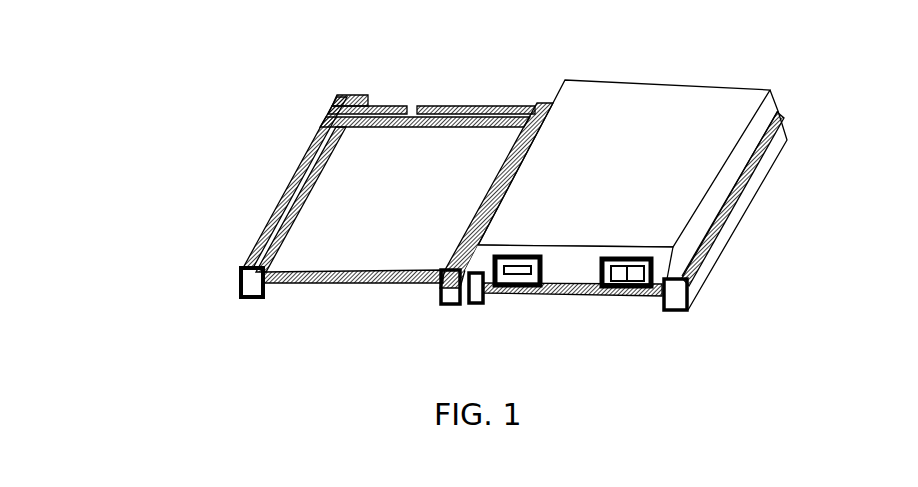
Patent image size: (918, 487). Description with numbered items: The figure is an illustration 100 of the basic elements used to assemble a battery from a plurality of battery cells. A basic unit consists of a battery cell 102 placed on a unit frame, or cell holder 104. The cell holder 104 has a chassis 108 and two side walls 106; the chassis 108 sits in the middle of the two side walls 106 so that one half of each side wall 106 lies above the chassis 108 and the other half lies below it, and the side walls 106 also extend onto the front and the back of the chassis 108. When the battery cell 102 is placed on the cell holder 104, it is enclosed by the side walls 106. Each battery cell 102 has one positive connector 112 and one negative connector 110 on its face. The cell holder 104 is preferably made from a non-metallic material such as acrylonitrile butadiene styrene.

The illustration 100 is at (256, 94).
The battery cell 102 is at (613, 82).
The unit frame (cell holder) 104 is at (385, 105).
The side wall 106 is at (256, 233).
The chassis 108 is at (292, 280).
The negative connector 110 is at (507, 285).
The positive connector 112 is at (620, 288).